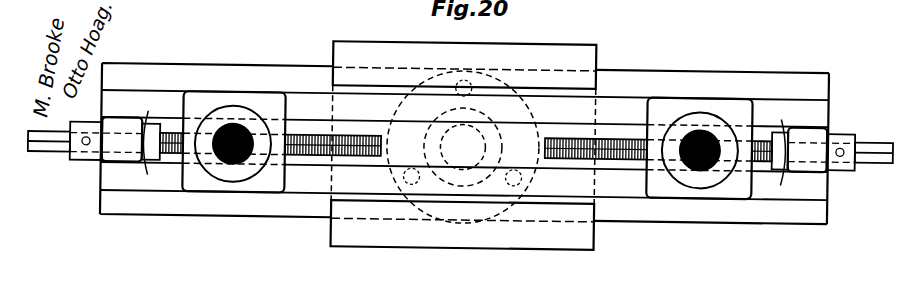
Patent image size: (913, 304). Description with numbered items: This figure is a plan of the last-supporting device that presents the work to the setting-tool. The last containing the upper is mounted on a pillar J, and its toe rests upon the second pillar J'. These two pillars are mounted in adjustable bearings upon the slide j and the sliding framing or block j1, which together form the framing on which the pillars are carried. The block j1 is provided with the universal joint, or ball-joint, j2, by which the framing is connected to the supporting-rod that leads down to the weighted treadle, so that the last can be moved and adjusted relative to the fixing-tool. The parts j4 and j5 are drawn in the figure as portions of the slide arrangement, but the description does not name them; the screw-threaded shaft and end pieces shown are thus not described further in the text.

The slide j is at (801, 242).
The block j1 is at (475, 245).
The universal joint j2 is at (445, 160).
The slide block j4 is at (713, 242).
The shaft end j5 is at (860, 190).
The second pillar J' is at (225, 180).
The pillar J is at (675, 192).